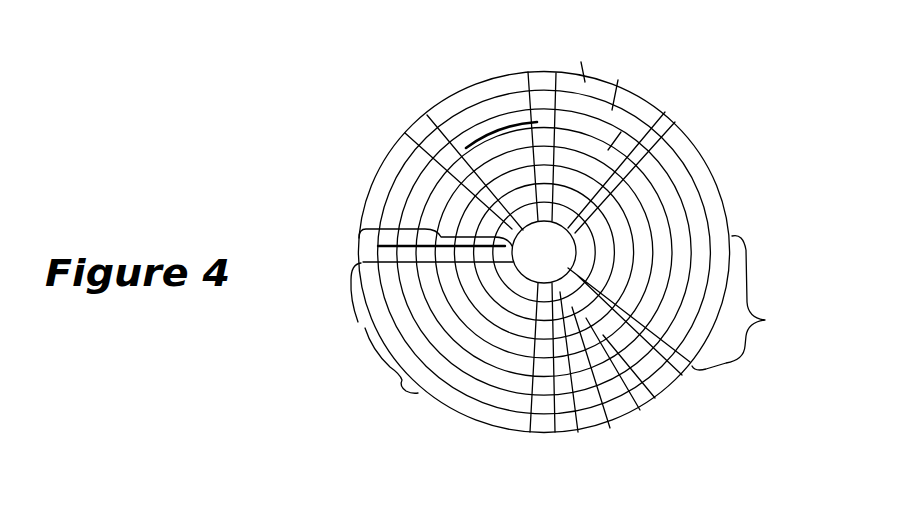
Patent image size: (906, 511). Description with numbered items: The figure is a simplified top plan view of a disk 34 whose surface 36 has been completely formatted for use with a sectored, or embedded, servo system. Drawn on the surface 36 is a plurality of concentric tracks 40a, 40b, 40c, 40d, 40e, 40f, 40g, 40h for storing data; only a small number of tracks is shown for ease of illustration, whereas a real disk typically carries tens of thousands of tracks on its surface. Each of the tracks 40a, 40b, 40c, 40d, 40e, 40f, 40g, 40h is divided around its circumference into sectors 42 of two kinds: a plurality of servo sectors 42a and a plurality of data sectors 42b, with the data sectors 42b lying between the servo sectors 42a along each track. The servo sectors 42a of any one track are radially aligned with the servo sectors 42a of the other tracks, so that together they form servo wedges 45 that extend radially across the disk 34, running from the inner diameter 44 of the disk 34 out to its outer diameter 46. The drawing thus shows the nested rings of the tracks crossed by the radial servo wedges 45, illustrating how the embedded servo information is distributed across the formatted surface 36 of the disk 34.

The disk 34 is at (455, 90).
The surface 36 is at (432, 173).
The inner diameter 44 is at (522, 262).
The servo wedges 45 is at (383, 200).
The outer diameter 46 is at (457, 413).
The sectors 42 is at (765, 320).
The servo sectors 42a is at (418, 393).
The data sectors 42b is at (360, 324).
The track 40a is at (581, 62).
The track 40b is at (618, 80).
The track 40c is at (623, 130).
The track 40d is at (635, 120).
The track 40e is at (655, 398).
The track 40f is at (640, 410).
The track 40g is at (610, 428).
The track 40h is at (578, 432).